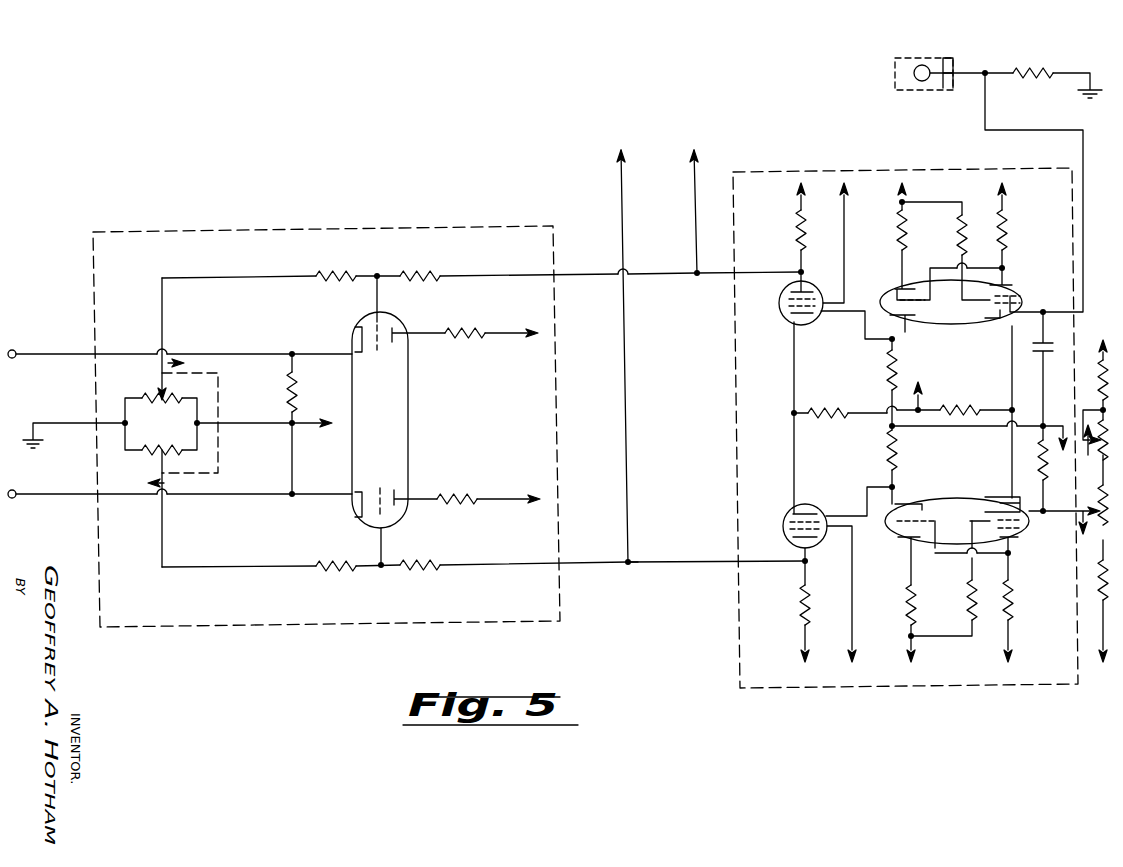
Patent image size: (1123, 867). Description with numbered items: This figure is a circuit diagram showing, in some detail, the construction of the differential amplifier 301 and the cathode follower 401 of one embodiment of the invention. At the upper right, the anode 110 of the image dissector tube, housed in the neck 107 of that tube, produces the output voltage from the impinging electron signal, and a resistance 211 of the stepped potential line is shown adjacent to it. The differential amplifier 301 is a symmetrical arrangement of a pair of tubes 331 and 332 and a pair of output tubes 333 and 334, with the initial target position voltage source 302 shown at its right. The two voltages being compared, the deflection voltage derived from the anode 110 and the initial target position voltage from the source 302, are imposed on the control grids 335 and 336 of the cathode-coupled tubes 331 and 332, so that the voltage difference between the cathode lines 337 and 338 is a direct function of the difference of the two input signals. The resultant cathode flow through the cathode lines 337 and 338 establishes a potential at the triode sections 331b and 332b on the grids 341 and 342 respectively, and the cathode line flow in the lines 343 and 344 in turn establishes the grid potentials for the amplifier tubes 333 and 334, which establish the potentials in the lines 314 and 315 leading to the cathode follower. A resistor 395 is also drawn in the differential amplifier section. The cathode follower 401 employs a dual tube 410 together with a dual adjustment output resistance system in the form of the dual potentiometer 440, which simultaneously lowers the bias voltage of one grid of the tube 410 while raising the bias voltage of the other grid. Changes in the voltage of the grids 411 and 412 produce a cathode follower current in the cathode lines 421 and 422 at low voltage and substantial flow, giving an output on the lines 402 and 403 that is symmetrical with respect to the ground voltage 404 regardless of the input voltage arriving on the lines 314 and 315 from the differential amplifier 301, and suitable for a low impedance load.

The cathode follower 401 is at (376, 208).
The output line 402 is at (68, 340).
The output line 403 is at (66, 496).
The ground voltage 404 is at (72, 408).
The dual potentiometer 440 is at (154, 450).
The cathode line 421 is at (262, 340).
The cathode line 422 is at (270, 495).
The dual tube 410 is at (400, 439).
The grid 411 is at (380, 323).
The grid 412 is at (380, 498).
The line 314 is at (677, 275).
The line 315 is at (685, 538).
The differential amplifier 301 is at (853, 154).
The output tube 333 is at (785, 318).
The output tube 334 is at (790, 508).
The grid 341 is at (892, 280).
The grid 342 is at (906, 542).
The cathode line 343 is at (882, 346).
The cathode line 344 is at (882, 486).
The tube 331 is at (962, 321).
The triode section 331b is at (906, 332).
The tube 332 is at (969, 498).
The triode section 332b is at (904, 496).
The control grid 335 is at (992, 316).
The control grid 336 is at (994, 508).
The cathode line 337 is at (1006, 253).
The cathode line 338 is at (1010, 575).
The resistor 395 is at (984, 396).
The initial target position voltage source 302 is at (1096, 344).
The anode 110 is at (921, 84).
The neck 107 is at (944, 92).
The resistance 211 is at (1040, 73).